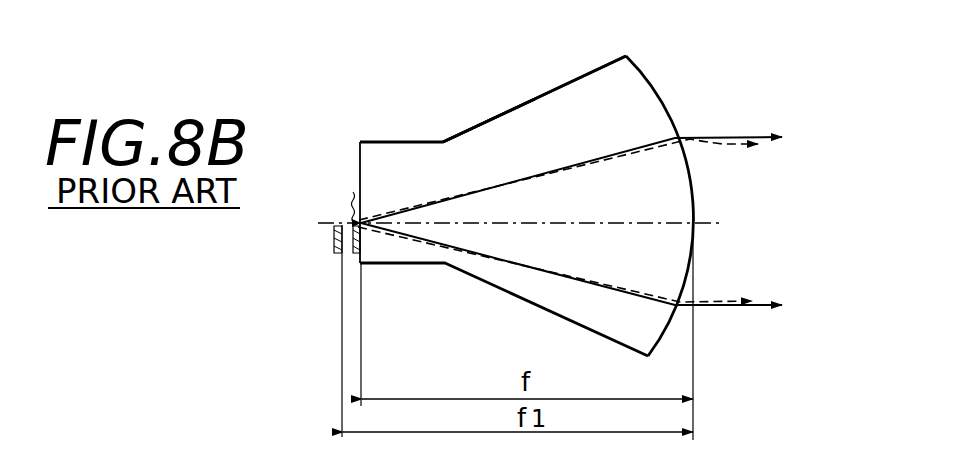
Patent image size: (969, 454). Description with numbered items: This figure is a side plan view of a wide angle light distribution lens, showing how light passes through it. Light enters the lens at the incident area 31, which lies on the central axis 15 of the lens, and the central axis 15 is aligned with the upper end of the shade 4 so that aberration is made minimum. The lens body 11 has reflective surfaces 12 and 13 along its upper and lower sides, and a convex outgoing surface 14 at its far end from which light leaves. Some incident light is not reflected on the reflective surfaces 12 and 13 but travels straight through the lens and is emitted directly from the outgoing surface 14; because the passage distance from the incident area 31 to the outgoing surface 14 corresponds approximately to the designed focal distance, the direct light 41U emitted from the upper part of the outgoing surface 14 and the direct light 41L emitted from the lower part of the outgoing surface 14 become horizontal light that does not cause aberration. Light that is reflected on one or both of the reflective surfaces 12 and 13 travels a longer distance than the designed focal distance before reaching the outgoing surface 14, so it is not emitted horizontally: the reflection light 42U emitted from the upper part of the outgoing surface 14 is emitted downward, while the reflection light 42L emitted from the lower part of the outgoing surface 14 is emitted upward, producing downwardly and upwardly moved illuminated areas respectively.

The lens 11 is at (360, 160).
The reflective surface 12 is at (523, 128).
The reflective surface 13 is at (487, 150).
The outgoing surface 14 is at (643, 80).
The central axis 15 is at (722, 223).
The incident area 31 is at (339, 221).
The shade 4 is at (363, 252).
The direct light 41U is at (757, 134).
The reflection light 42U is at (723, 144).
The direct light 41L is at (755, 307).
The reflection light 42L is at (718, 300).